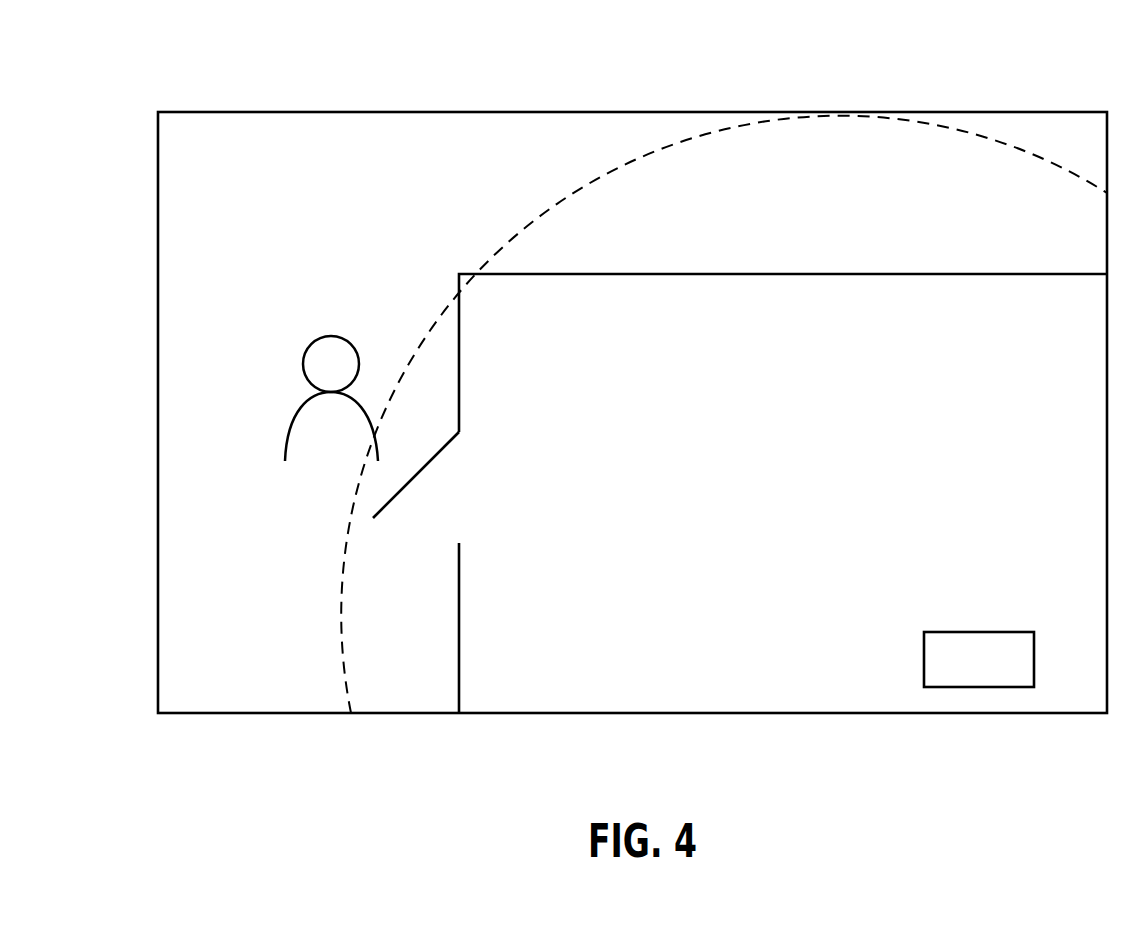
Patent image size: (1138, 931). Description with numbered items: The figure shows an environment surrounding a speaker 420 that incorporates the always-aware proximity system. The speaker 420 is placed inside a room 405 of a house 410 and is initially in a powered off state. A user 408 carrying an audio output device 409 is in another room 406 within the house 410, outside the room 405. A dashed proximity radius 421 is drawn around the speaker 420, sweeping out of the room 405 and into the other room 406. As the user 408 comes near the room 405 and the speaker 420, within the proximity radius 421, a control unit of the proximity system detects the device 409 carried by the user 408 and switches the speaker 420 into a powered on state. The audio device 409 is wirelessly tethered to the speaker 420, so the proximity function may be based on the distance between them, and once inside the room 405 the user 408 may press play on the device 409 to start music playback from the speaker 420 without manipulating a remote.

The house 410 is at (150, 82).
The another room 406 is at (248, 167).
The room 405 is at (823, 320).
The proximity radius 421 is at (340, 645).
The user 408 is at (352, 330).
The audio output device 409 is at (331, 426).
The speaker 420 is at (998, 630).